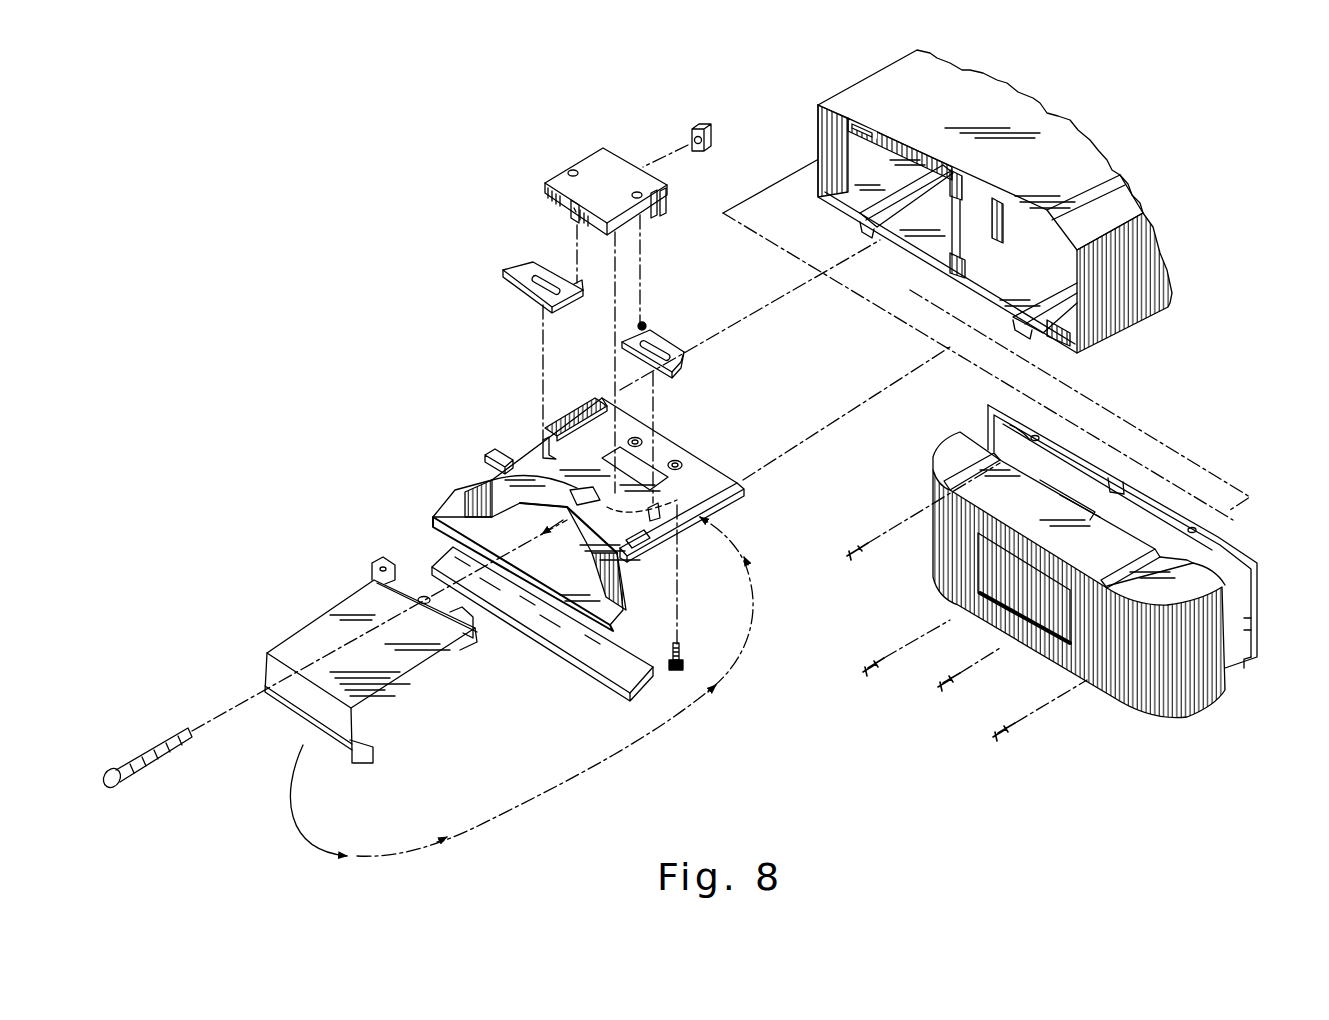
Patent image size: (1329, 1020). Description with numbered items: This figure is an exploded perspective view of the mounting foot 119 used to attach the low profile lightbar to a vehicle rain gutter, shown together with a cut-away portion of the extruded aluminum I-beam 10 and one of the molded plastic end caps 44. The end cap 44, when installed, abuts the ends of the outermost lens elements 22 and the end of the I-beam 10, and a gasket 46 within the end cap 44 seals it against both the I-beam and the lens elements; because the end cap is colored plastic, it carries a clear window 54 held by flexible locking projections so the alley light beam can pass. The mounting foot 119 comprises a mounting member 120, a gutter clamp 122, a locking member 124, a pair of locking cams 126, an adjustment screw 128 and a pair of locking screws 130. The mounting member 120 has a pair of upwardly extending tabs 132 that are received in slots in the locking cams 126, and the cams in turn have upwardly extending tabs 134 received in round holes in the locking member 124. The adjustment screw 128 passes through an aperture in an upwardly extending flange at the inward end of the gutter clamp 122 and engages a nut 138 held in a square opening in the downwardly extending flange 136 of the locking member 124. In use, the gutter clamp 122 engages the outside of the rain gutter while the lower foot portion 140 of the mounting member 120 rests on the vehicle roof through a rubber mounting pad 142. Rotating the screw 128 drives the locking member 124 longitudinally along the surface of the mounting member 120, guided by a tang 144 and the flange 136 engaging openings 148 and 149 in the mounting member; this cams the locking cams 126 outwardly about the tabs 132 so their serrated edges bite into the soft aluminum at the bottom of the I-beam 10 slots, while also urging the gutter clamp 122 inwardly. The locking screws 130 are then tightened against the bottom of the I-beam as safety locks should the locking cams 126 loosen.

The I-beam 10 is at (897, 95).
The lens elements 22 is at (1118, 203).
The end cap 44 is at (1117, 693).
The gasket 46 is at (1240, 553).
The window 54 is at (1005, 595).
The mounting foot 119 is at (376, 404).
The mounting member 120 is at (530, 452).
The gutter clamp 122 is at (370, 603).
The locking member 124 is at (560, 178).
The locking cams 126 is at (503, 274).
The adjustment screw 128 is at (165, 745).
The locking screws 130 is at (681, 650).
The tabs 132 is at (543, 440).
The tabs 134 is at (646, 325).
The flange 136 is at (662, 210).
The nut 138 is at (690, 130).
The foot portion 140 is at (620, 552).
The rubber mounting pad 142 is at (440, 553).
The tang 144 is at (568, 211).
The opening 148 is at (492, 480).
The opening 149 is at (633, 467).